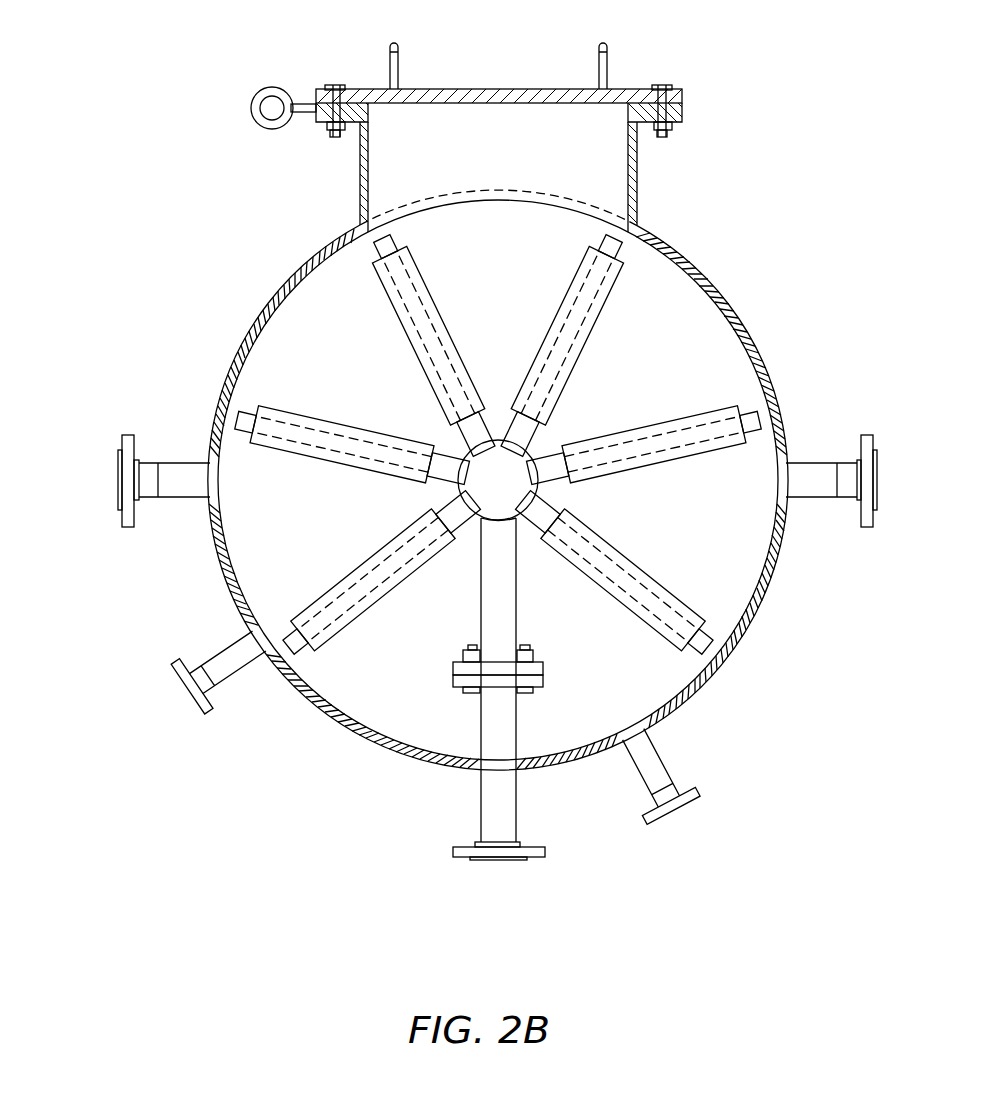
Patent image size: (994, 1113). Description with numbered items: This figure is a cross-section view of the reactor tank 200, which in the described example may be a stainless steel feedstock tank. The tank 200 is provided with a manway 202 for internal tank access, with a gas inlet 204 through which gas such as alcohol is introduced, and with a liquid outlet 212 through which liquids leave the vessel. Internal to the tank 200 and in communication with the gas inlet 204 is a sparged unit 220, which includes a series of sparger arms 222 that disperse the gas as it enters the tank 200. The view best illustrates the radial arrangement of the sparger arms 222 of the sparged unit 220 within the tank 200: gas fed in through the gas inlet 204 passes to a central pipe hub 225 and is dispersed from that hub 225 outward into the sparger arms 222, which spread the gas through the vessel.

The reactor tank 200 is at (780, 550).
The manway 202 is at (632, 91).
The gas inlet 204 is at (455, 849).
The liquid outlet 212 is at (118, 472).
The sparged unit 220 is at (441, 596).
The sparger arms 222 is at (720, 413).
The central pipe hub 225 is at (518, 513).